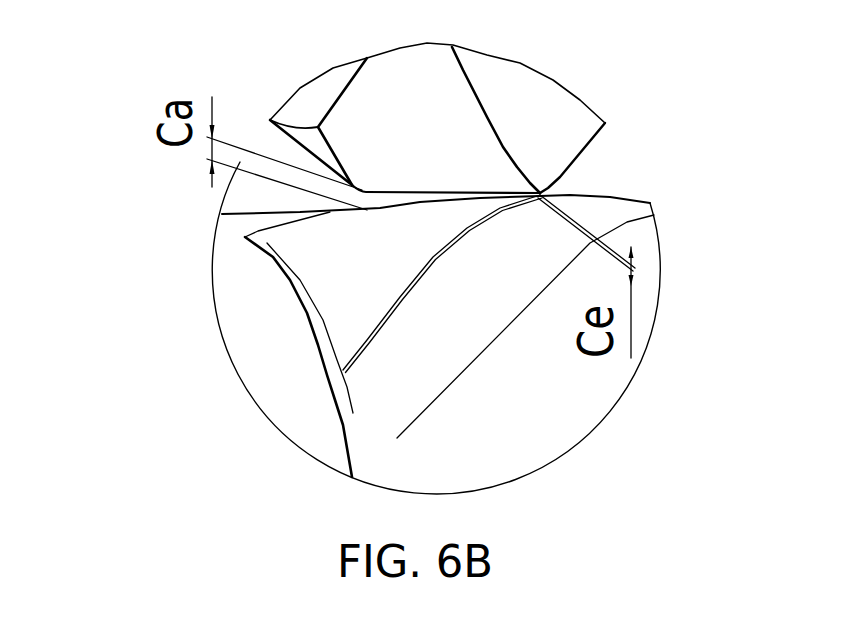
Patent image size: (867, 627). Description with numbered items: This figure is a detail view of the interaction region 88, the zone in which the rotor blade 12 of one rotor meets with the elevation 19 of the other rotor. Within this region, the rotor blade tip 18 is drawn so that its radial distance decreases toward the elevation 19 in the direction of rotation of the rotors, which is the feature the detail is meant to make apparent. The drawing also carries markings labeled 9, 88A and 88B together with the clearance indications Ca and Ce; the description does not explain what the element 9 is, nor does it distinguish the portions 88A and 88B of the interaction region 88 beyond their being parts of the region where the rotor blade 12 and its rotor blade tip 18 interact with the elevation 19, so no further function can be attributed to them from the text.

The tool body 9 is at (273, 399).
The rotor blade 12 is at (312, 102).
The rotor blade tip 18 is at (405, 80).
The elevation 19 is at (380, 278).
The interaction region 88 is at (422, 260).
The first cutting edge portion 88A is at (470, 362).
The second cutting edge portion 88B is at (258, 231).